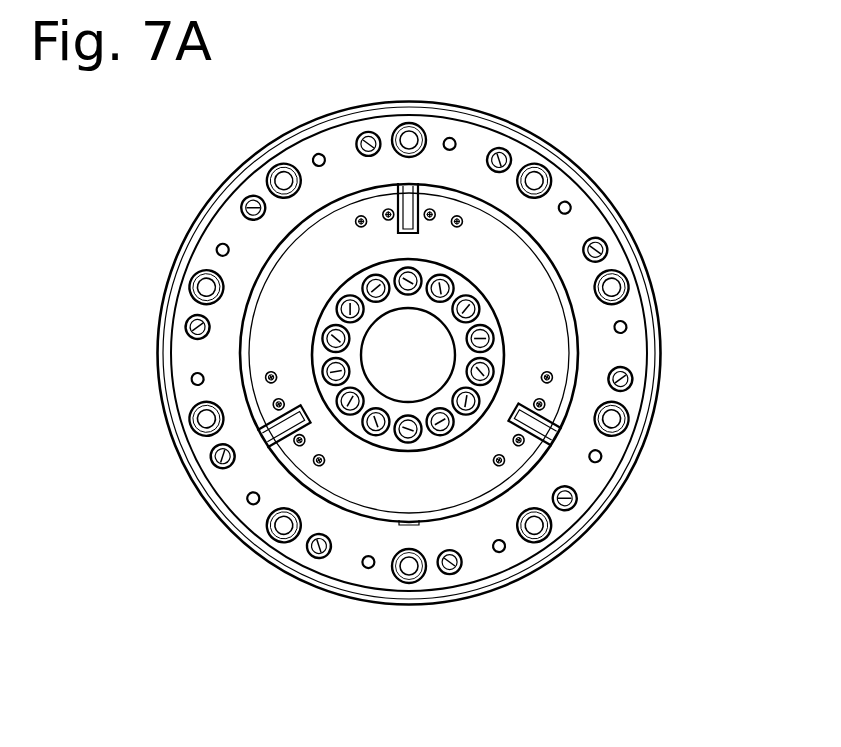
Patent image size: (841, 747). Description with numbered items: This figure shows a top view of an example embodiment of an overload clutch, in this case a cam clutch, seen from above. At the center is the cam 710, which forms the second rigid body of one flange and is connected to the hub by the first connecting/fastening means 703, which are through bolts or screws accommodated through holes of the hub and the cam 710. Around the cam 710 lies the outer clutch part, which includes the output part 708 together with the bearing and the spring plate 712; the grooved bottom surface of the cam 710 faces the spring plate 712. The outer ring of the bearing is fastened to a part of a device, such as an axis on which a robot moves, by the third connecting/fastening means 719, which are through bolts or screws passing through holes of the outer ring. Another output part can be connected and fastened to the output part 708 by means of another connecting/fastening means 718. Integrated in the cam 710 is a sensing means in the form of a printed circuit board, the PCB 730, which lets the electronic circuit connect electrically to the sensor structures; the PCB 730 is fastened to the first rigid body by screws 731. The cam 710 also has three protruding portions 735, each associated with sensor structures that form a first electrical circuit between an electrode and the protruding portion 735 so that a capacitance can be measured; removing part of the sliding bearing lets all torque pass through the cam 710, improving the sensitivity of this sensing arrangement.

The first connecting/fastening means 703 is at (325, 335).
The output part 708 is at (340, 137).
The cam 710 is at (401, 355).
The spring plate 712 is at (592, 176).
The another connecting/fastening means 718 is at (601, 249).
The third connecting/fastening means 719 is at (280, 180).
The PCB 730 is at (288, 287).
The screws 731 is at (266, 381).
The protruding portion 735 is at (412, 215).